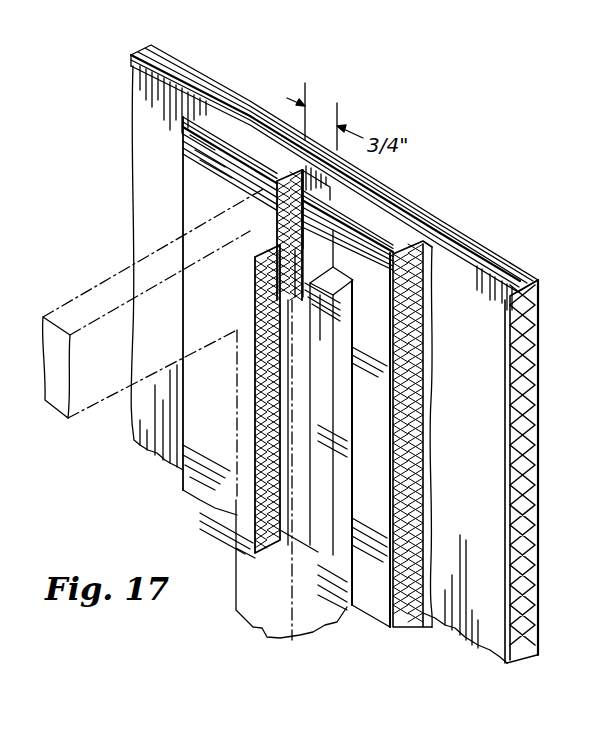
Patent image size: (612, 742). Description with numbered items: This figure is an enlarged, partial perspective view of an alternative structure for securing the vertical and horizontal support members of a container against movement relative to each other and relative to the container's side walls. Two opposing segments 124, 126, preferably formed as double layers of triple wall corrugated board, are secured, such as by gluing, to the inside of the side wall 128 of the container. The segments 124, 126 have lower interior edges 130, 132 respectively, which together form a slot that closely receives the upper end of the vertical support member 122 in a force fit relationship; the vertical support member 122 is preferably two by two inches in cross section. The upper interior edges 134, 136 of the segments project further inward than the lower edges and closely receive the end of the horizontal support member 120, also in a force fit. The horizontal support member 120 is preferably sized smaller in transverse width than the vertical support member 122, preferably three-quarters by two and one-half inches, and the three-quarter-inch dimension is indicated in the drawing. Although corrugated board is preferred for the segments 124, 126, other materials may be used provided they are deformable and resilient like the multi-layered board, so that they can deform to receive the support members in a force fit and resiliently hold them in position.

The horizontal support member 120 is at (114, 373).
The vertical support member 122 is at (277, 608).
The segment 124 is at (231, 373).
The segment 126 is at (392, 403).
The side wall 128 is at (487, 443).
The lower interior edge 130 is at (254, 415).
The lower interior edge 132 is at (318, 477).
The upper interior edge 134 is at (276, 191).
The upper interior edge 136 is at (305, 245).